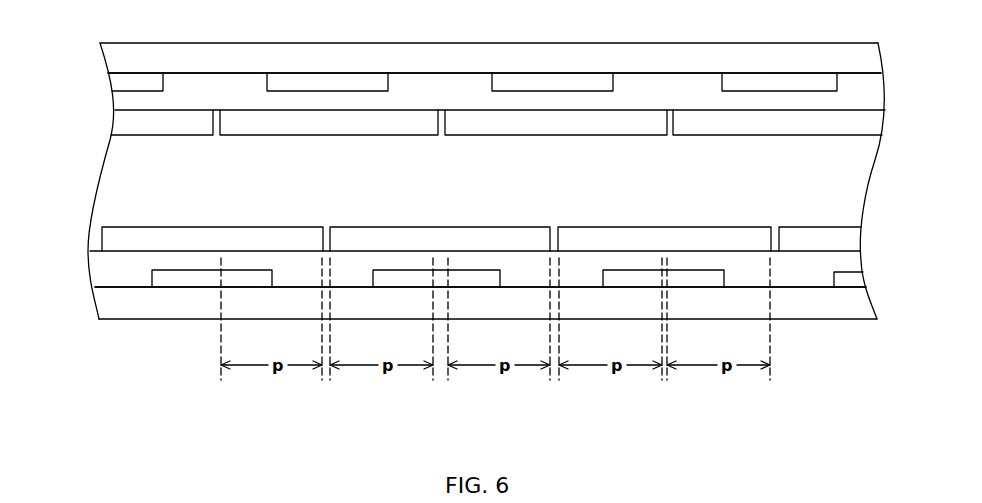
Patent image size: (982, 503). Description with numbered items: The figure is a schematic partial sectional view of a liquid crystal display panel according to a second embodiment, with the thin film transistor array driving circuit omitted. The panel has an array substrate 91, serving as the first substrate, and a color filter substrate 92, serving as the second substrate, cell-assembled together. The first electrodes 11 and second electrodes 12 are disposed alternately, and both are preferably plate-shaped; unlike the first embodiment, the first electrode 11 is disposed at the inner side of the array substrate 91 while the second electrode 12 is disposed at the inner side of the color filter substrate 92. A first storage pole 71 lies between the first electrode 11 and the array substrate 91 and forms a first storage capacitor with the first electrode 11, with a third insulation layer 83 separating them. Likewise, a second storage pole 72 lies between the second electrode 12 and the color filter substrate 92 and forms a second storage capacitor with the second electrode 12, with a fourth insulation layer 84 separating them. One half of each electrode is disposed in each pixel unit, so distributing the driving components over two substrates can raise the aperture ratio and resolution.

The color filter substrate 92 is at (117, 59).
The fourth insulation layer 84 is at (123, 98).
The second storage pole 72 is at (525, 87).
The second electrode 12 is at (307, 125).
The first electrode 11 is at (183, 238).
The third insulation layer 83 is at (102, 272).
The first storage pole 71 is at (634, 285).
The array substrate 91 is at (112, 303).